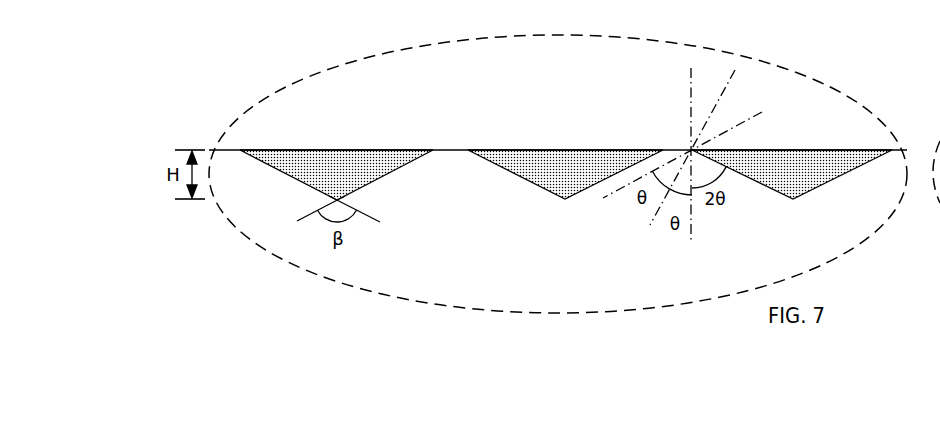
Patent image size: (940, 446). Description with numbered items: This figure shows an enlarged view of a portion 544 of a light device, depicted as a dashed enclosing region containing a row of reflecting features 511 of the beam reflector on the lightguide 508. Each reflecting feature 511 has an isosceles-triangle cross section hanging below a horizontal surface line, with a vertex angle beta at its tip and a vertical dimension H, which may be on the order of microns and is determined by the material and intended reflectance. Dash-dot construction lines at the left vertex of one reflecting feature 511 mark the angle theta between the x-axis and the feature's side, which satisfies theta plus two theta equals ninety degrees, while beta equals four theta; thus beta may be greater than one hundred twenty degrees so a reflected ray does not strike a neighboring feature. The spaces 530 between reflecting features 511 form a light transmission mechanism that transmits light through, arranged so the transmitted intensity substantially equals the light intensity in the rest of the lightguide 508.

The portion 544 is at (342, 69).
The reflecting features 511 is at (374, 150).
The spaces 530 is at (452, 150).
The lightguide 508 is at (445, 242).